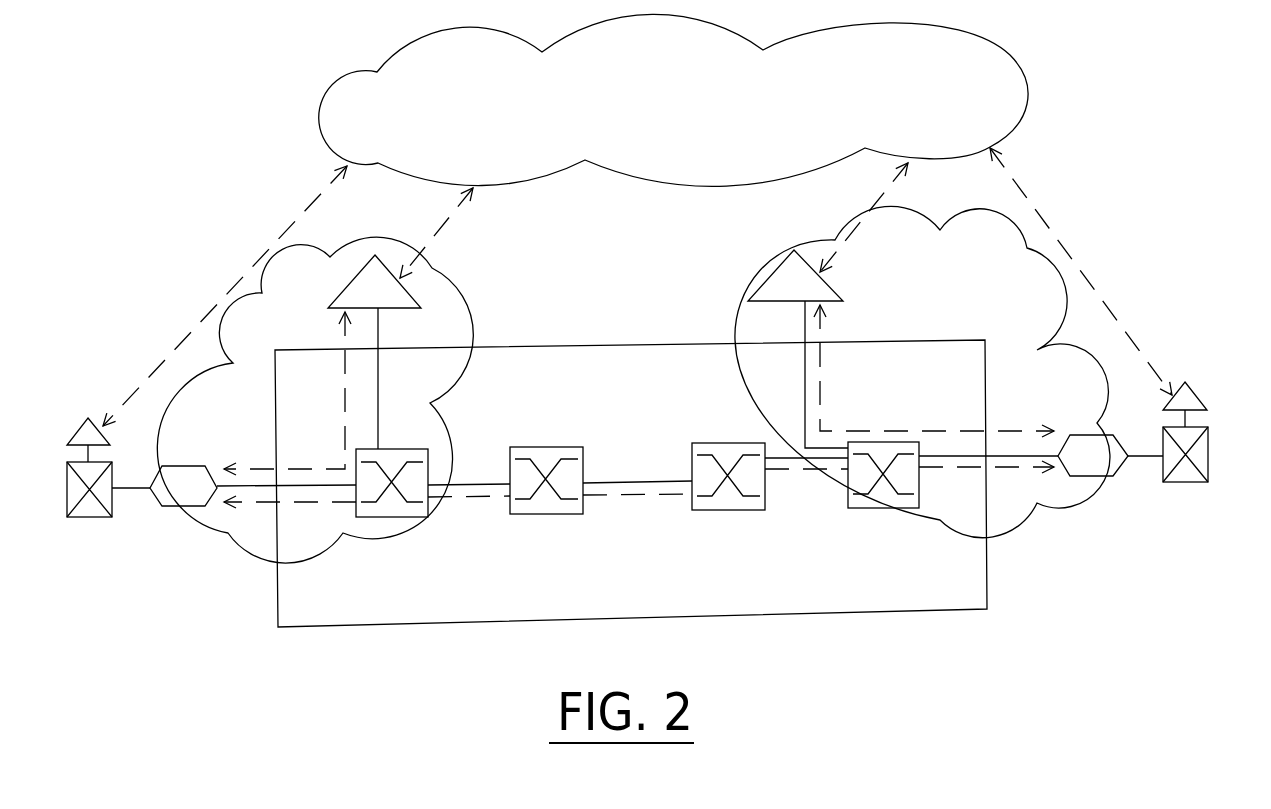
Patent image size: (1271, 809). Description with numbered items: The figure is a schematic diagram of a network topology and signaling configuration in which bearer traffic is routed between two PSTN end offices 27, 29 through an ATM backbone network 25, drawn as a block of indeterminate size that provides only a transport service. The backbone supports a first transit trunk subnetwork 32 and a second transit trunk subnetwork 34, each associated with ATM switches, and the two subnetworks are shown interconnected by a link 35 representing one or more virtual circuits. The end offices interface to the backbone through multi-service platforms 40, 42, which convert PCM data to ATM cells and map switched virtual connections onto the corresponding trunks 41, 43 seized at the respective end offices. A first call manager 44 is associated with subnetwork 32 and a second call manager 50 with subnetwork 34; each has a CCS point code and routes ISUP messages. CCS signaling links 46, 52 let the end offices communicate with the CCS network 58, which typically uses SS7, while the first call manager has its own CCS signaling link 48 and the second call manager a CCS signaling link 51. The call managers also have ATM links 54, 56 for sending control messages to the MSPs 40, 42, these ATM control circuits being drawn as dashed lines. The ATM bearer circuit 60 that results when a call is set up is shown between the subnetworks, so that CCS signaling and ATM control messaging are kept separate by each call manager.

The CCS network 58 is at (1015, 60).
The ATM backbone network 25 is at (348, 662).
The first transit trunk subnetwork 32 is at (474, 305).
The second transit trunk subnetwork 34 is at (1033, 247).
The first call manager 44 is at (383, 265).
The second call manager 50 is at (772, 273).
The CCS signaling link 46 is at (232, 288).
The CCS signaling link 48 is at (432, 240).
The CCS signaling link 51 is at (853, 234).
The CCS signaling link 52 is at (1085, 277).
The ATM link 54 is at (378, 357).
The ATM link 56 is at (800, 390).
The link 35 is at (636, 480).
The ATM bearer circuit 60 is at (635, 497).
The multi-service platform 40 is at (189, 466).
The multi-service platform 42 is at (1080, 476).
The trunk 41 is at (125, 488).
The trunk 43 is at (1147, 456).
The end office 27 is at (67, 495).
The end office 29 is at (1208, 425).